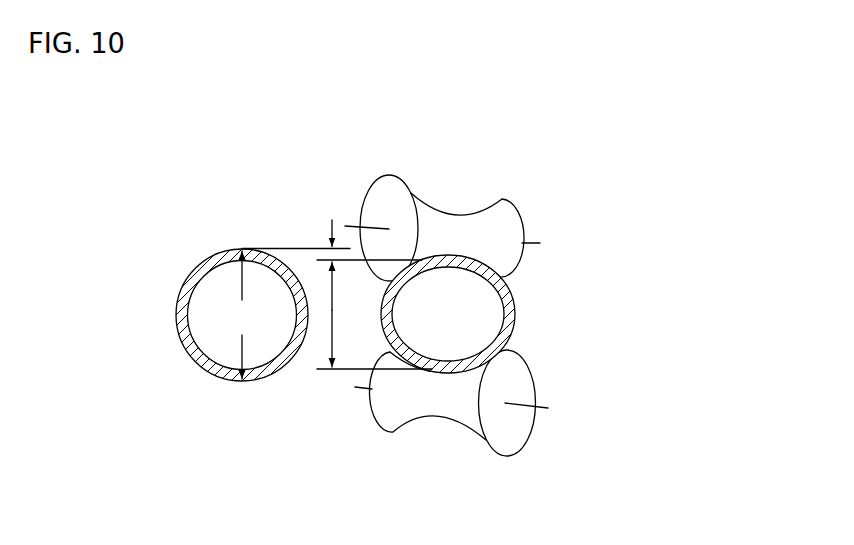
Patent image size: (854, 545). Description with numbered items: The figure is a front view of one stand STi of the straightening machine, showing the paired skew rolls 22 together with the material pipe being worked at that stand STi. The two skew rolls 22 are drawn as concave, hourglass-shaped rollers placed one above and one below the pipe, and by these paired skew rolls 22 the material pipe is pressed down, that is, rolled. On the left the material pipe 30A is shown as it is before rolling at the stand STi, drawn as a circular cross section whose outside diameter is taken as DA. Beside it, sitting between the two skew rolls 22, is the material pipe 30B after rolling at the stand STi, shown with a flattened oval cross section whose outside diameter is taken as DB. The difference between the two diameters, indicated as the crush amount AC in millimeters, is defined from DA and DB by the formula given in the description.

The skew roll 22 is at (523, 212).
The material pipe before rolling 30A is at (202, 365).
The material pipe after rolling 30B is at (515, 313).
The stand STi is at (479, 145).
The crush amount AC is at (320, 249).
The outside diameter of material pipe before rolling DA is at (244, 315).
The outside diameter of material pipe after rolling DB is at (374, 315).